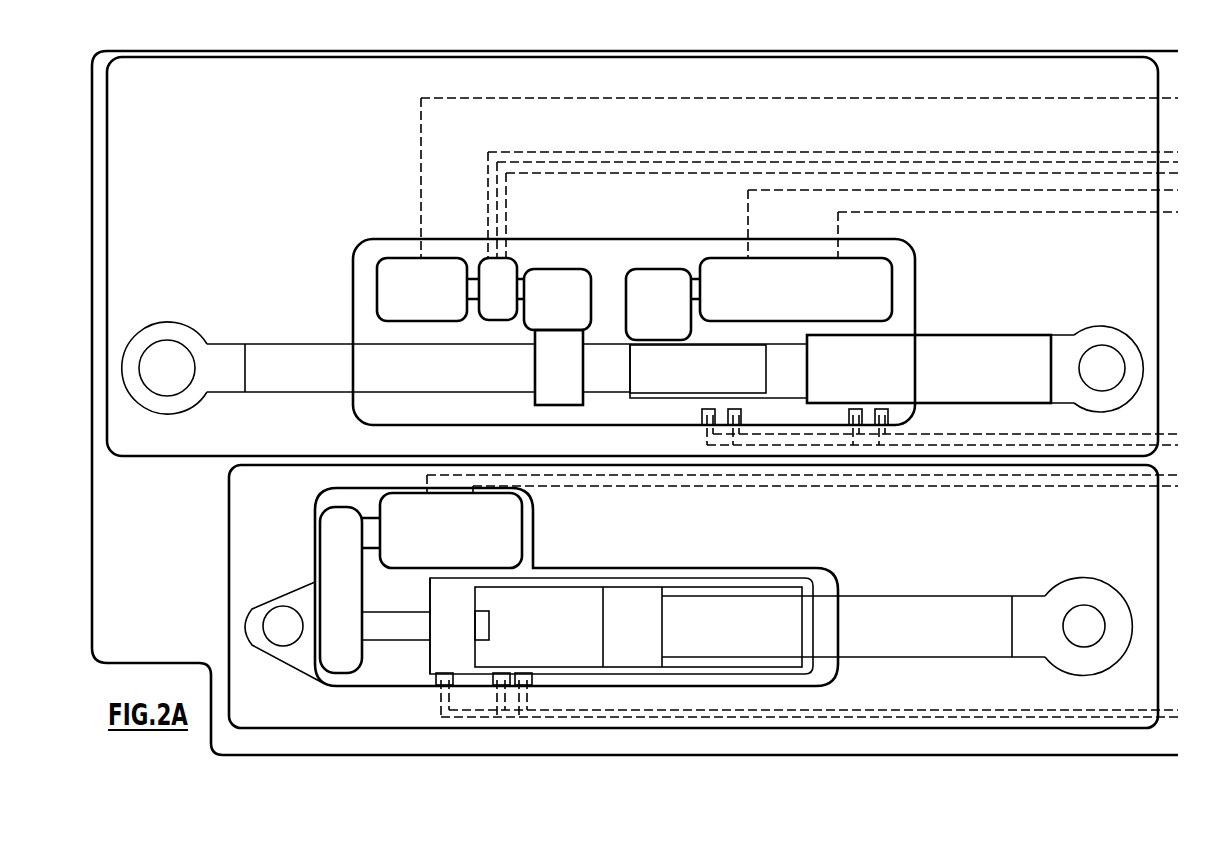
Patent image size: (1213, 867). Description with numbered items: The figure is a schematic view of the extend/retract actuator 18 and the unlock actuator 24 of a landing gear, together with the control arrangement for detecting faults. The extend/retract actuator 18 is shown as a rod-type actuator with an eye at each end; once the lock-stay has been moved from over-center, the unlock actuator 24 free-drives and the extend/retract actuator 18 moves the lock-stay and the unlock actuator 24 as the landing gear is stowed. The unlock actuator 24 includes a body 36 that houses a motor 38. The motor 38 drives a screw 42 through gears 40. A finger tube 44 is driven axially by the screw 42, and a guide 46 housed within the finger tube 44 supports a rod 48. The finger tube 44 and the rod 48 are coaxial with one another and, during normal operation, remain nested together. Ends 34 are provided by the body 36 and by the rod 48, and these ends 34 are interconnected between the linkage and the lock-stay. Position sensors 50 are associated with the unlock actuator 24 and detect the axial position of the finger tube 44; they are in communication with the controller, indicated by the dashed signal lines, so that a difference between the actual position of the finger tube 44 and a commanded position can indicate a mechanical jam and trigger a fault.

The extend/retract actuator 18 is at (916, 284).
The unlock actuator 24 is at (818, 568).
The ends 34 is at (288, 636).
The body 36 is at (579, 567).
The motor 38 is at (508, 521).
The gears 40 is at (337, 517).
The screw 42 is at (420, 632).
The finger tube 44 is at (635, 586).
The guide 46 is at (650, 625).
The rod 48 is at (908, 652).
The position sensors 50 is at (435, 680).